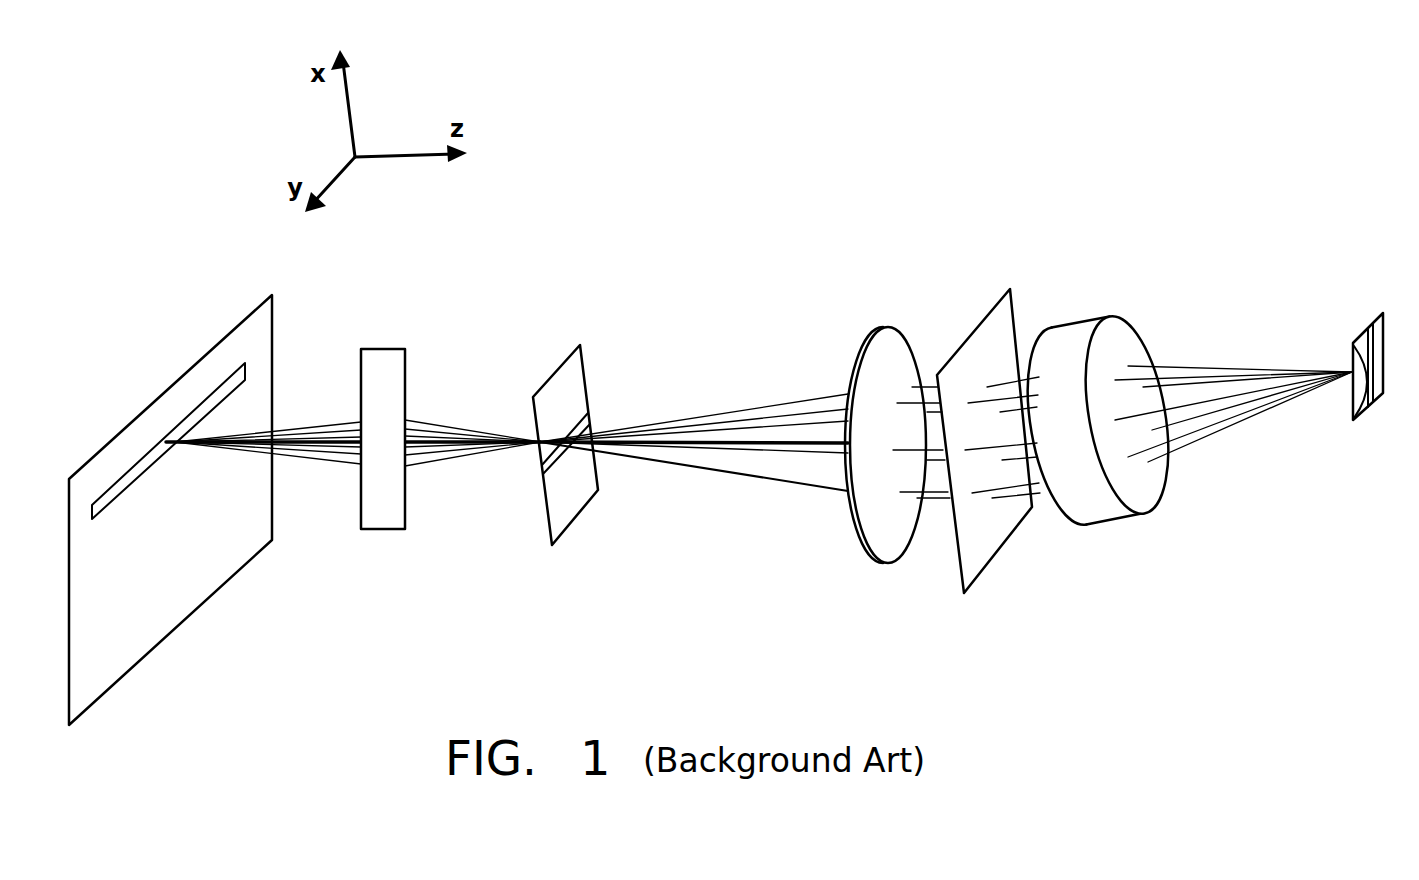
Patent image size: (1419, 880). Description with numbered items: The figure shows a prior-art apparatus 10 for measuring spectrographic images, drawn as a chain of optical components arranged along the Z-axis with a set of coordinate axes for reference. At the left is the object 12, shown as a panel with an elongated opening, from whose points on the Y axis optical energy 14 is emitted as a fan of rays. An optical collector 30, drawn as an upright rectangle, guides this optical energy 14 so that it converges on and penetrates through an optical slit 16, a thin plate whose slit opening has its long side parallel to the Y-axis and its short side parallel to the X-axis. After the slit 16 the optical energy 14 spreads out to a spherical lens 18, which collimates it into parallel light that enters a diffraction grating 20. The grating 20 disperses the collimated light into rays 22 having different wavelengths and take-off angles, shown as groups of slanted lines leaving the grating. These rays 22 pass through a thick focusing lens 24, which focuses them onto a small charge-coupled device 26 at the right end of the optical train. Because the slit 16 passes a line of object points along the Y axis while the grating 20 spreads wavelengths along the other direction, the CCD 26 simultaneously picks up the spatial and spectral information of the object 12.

The apparatus 10 is at (870, 198).
The object 12 is at (173, 632).
The optical energy 14 is at (332, 463).
The optical slit 16 is at (580, 345).
The spherical lens 18 is at (900, 330).
The diffraction grating 20 is at (1010, 289).
The rays 22 is at (1050, 495).
The focusing lens 24 is at (1110, 316).
The charge-coupled device 26 is at (1383, 313).
The optical collector 30 is at (383, 348).